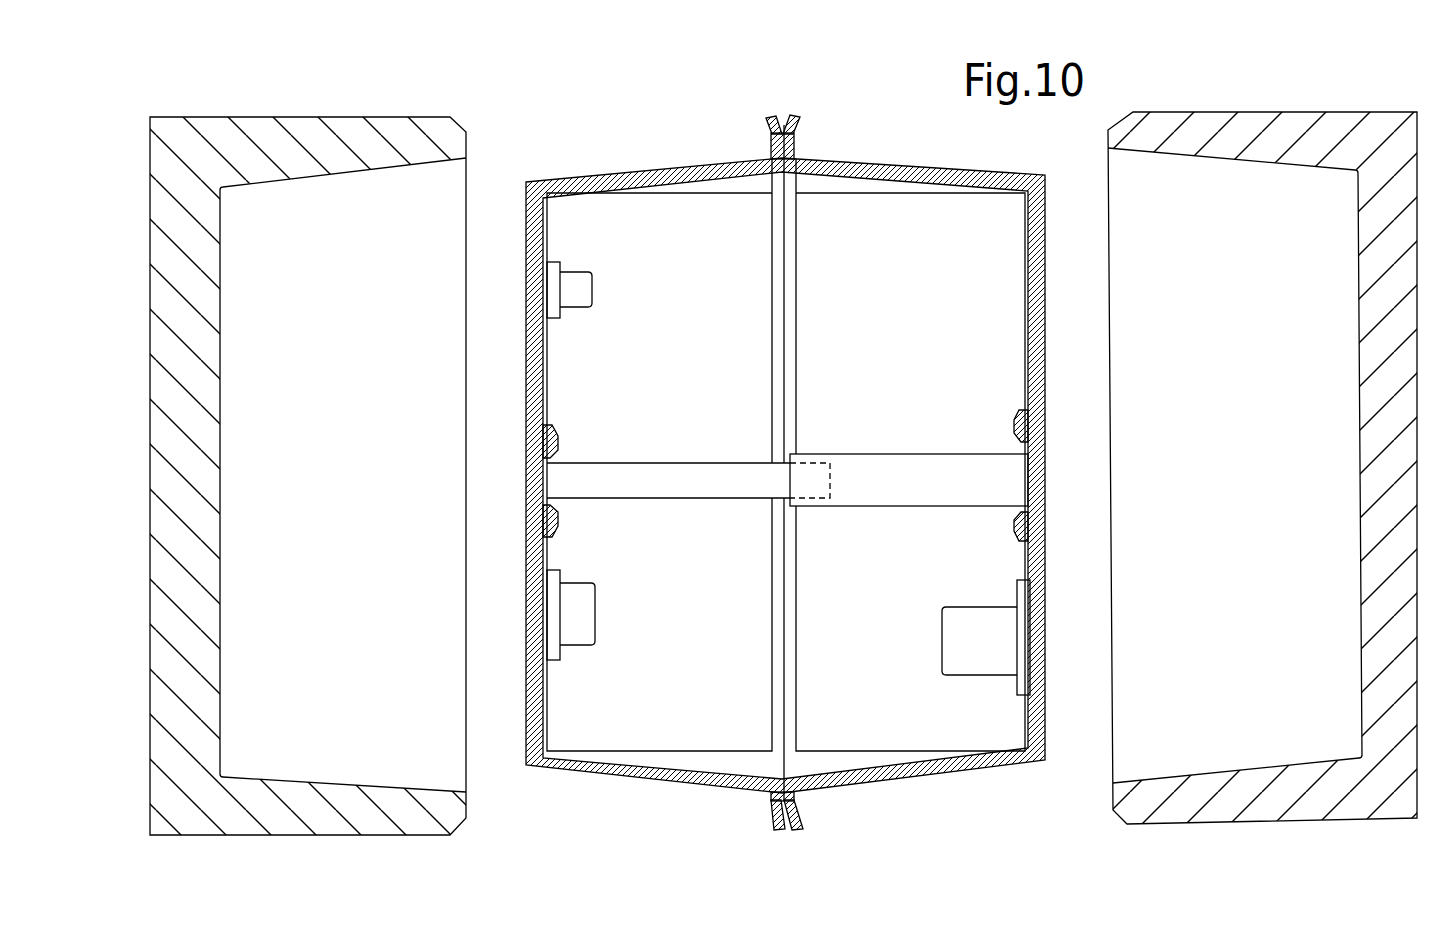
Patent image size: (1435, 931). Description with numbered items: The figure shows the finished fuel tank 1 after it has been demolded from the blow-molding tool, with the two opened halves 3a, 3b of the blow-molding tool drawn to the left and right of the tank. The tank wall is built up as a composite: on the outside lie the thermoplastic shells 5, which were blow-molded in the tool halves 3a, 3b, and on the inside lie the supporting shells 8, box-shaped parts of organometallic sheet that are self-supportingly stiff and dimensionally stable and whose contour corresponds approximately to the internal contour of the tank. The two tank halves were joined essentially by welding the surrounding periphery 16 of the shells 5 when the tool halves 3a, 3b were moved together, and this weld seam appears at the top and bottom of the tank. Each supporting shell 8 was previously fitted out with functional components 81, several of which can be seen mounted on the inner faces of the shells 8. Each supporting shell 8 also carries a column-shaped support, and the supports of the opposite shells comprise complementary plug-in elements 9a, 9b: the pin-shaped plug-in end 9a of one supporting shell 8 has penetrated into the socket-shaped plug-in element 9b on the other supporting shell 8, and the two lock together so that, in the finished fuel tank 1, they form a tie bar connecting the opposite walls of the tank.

The fuel tank 1 is at (785, 447).
The half of the blow-molding tool 3a is at (297, 143).
The half of the blow-molding tool 3b is at (1260, 142).
The thermoplastic shell 5 is at (668, 172).
The supporting shell 8 is at (671, 185).
The pin-shaped plug-in end 9a is at (668, 487).
The socket-shaped plug-in element 9b is at (895, 470).
The surrounding periphery 16 is at (766, 137).
The functional component 81 is at (576, 293).